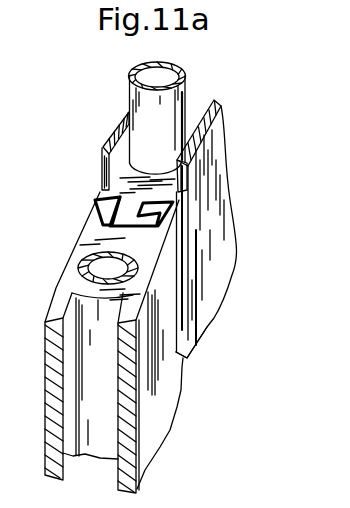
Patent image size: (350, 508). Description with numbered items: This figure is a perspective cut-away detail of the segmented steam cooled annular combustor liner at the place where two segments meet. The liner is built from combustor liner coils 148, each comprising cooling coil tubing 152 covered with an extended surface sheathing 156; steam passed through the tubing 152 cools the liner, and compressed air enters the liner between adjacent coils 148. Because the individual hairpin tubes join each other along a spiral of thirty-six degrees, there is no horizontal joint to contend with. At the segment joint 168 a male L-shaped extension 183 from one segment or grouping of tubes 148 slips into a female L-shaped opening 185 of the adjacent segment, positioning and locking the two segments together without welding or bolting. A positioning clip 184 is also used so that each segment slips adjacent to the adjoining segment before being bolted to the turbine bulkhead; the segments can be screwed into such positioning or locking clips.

The combustor liner coil 148 is at (188, 104).
The cooling coil tubing 152 is at (169, 64).
The extended surface sheathing 156 is at (112, 148).
The joint 168 is at (183, 366).
The male L-shaped extension 183 is at (123, 220).
The positioning clip 184 is at (215, 331).
The female L-shaped opening 185 is at (102, 235).